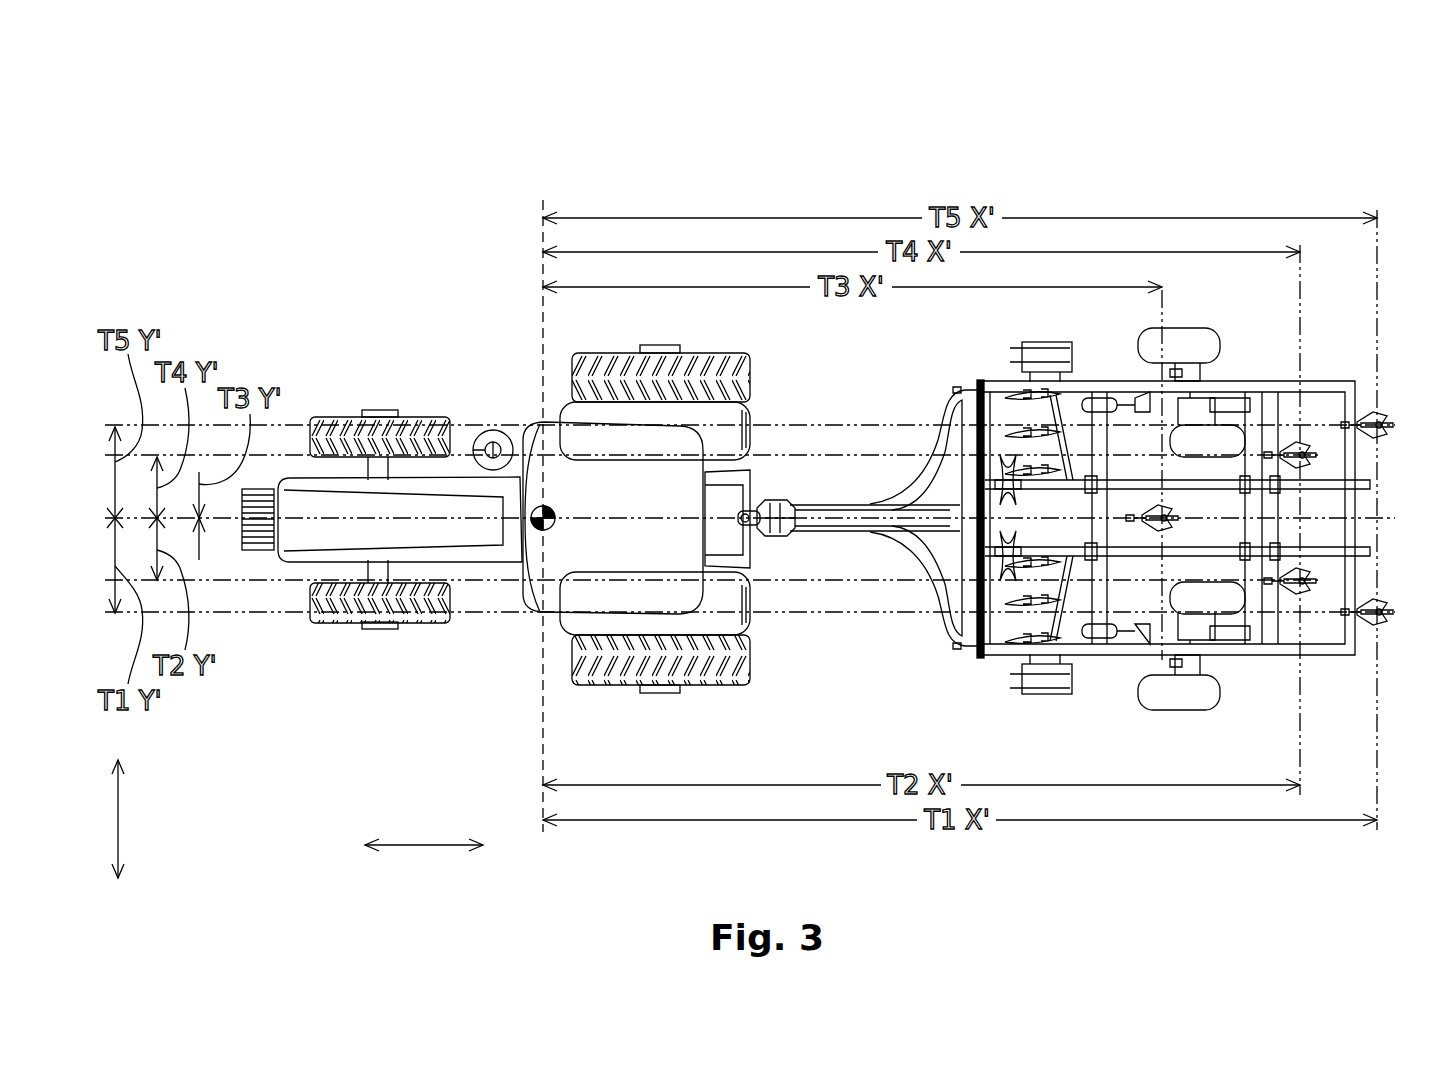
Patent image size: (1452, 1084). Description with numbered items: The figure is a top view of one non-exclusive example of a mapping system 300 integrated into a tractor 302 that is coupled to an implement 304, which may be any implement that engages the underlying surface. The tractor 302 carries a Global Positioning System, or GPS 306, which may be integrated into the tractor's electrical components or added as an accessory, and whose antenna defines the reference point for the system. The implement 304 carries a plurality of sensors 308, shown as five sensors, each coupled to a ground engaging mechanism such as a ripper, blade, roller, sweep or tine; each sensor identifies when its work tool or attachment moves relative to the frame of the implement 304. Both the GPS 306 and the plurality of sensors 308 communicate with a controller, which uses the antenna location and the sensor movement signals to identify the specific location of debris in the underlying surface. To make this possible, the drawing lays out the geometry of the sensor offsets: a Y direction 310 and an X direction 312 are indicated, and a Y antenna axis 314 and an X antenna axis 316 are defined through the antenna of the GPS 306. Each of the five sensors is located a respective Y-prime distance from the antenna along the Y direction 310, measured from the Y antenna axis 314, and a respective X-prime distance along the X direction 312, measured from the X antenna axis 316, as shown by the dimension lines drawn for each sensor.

The mapping system 300 is at (1086, 154).
The tractor 302 is at (488, 372).
The implement 304 is at (940, 666).
The Global Positioning System (GPS) 306 is at (537, 547).
The plurality of sensors 308 is at (1170, 502).
The Y direction 310 is at (118, 818).
The X direction 312 is at (420, 847).
The Y antenna axis 314 is at (317, 520).
The X antenna axis 316 is at (537, 742).